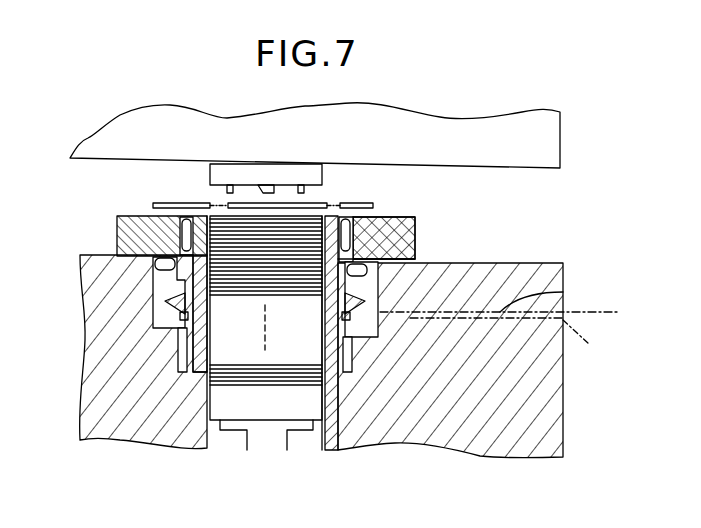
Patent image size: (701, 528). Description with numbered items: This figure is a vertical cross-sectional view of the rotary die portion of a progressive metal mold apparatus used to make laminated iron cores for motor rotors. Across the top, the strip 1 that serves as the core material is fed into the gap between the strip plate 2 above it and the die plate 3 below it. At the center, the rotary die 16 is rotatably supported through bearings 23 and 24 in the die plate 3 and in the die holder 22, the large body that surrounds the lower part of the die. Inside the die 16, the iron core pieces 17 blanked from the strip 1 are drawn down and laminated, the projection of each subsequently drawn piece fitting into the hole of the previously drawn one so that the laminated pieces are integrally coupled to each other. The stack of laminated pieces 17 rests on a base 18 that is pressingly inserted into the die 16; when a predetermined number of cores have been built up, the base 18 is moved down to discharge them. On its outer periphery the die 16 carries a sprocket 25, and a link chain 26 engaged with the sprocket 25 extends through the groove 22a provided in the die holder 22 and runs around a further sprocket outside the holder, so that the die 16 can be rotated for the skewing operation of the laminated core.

The strip 1 is at (170, 201).
The strip plate 2 is at (93, 160).
The die plate 3 is at (112, 232).
The rotary die 16 is at (330, 222).
The core pieces 17 is at (232, 216).
The base 18 is at (330, 416).
The die holder 22 is at (501, 337).
The groove 22a is at (522, 336).
The bearing 23 is at (372, 227).
The bearing 24 is at (419, 231).
The sprocket 25 is at (418, 254).
The link chain 26 is at (568, 292).